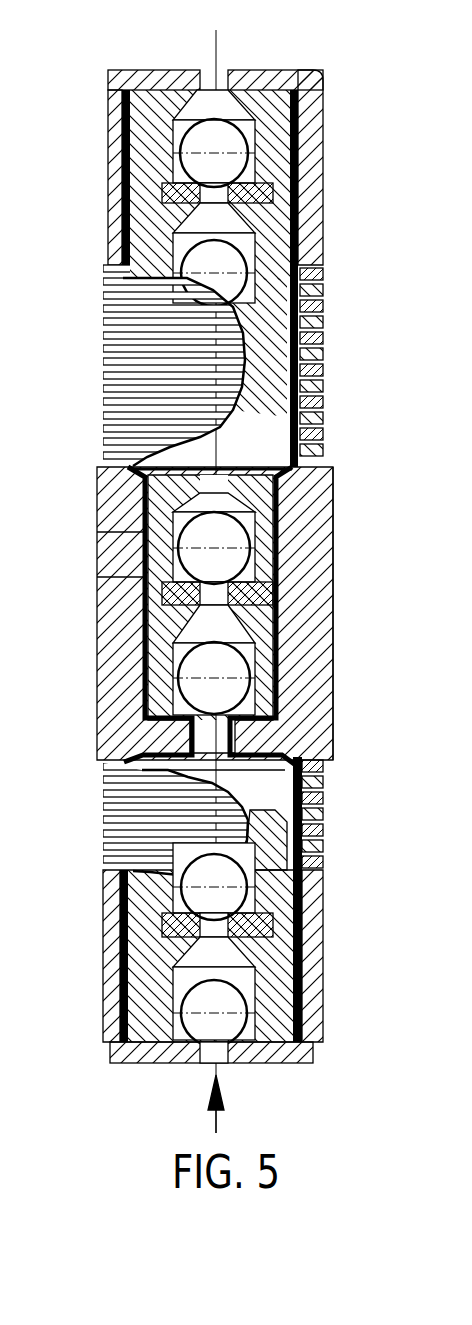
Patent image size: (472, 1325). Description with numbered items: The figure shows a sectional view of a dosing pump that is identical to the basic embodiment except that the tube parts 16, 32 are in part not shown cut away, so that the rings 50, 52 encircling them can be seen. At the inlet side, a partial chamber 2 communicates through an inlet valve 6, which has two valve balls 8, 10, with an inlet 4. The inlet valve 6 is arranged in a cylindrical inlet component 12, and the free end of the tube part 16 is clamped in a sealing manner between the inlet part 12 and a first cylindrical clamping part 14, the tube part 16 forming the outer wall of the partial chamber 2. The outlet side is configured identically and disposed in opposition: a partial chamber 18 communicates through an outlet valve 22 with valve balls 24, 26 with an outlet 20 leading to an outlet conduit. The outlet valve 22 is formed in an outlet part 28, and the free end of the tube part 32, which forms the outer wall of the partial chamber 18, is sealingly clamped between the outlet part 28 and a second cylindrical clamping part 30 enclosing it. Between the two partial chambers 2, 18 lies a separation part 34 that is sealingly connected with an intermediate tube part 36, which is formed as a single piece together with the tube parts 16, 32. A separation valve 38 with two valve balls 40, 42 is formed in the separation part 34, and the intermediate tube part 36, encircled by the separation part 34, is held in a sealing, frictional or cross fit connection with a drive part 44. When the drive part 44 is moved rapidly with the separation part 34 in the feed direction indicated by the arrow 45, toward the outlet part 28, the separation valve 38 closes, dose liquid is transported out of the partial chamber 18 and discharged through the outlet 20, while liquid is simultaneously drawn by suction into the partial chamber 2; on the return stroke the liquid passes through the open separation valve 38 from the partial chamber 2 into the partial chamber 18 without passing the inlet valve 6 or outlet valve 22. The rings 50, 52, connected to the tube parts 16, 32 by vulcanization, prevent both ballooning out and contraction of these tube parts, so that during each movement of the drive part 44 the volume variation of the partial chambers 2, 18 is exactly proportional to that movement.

The partial chamber 2 is at (326, 568).
The inlet 4 is at (240, 1082).
The inlet valve 6 is at (275, 1013).
The valve ball 8 is at (275, 884).
The valve ball 10 is at (253, 926).
The inlet component 12 is at (258, 1058).
The first cylindrical clamping part 14 is at (282, 899).
The tube part 16 is at (89, 956).
The partial chamber 18 is at (275, 597).
The outlet 20 is at (252, 574).
The outlet valve 22 is at (287, 141).
The valve ball 24 is at (265, 253).
The valve ball 26 is at (281, 243).
The outlet part 28 is at (230, 140).
The second cylindrical clamping part 30 is at (345, 268).
The tube part 32 is at (287, 278).
The separation part 34 is at (282, 648).
The intermediate tube part 36 is at (162, 616).
The separation valve 38 is at (288, 548).
The valve ball 40 is at (181, 613).
The valve ball 42 is at (288, 687).
The drive part 44 is at (368, 613).
The arrow 45 is at (184, 1109).
The ring 50 is at (151, 365).
The ring 52 is at (161, 820).